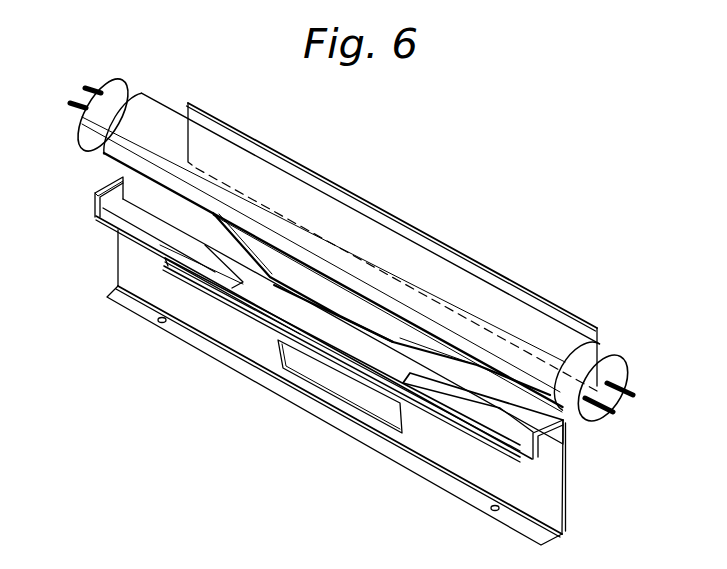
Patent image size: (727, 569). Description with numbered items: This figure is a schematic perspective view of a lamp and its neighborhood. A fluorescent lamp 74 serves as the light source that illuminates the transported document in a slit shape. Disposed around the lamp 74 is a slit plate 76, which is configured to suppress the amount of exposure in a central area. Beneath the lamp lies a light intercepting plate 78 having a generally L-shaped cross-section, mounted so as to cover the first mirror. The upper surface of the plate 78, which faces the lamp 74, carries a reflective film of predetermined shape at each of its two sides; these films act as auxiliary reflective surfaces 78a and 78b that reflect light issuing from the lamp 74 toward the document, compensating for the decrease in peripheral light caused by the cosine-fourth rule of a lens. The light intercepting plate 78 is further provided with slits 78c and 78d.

The fluorescent lamp 74 is at (143, 118).
The slit plate 76 is at (365, 208).
The light intercepting plate 78 is at (258, 340).
The auxiliary reflective surface 78a is at (135, 218).
The auxiliary reflective surface 78b is at (487, 417).
The slit 78c is at (217, 292).
The slit 78d is at (353, 392).